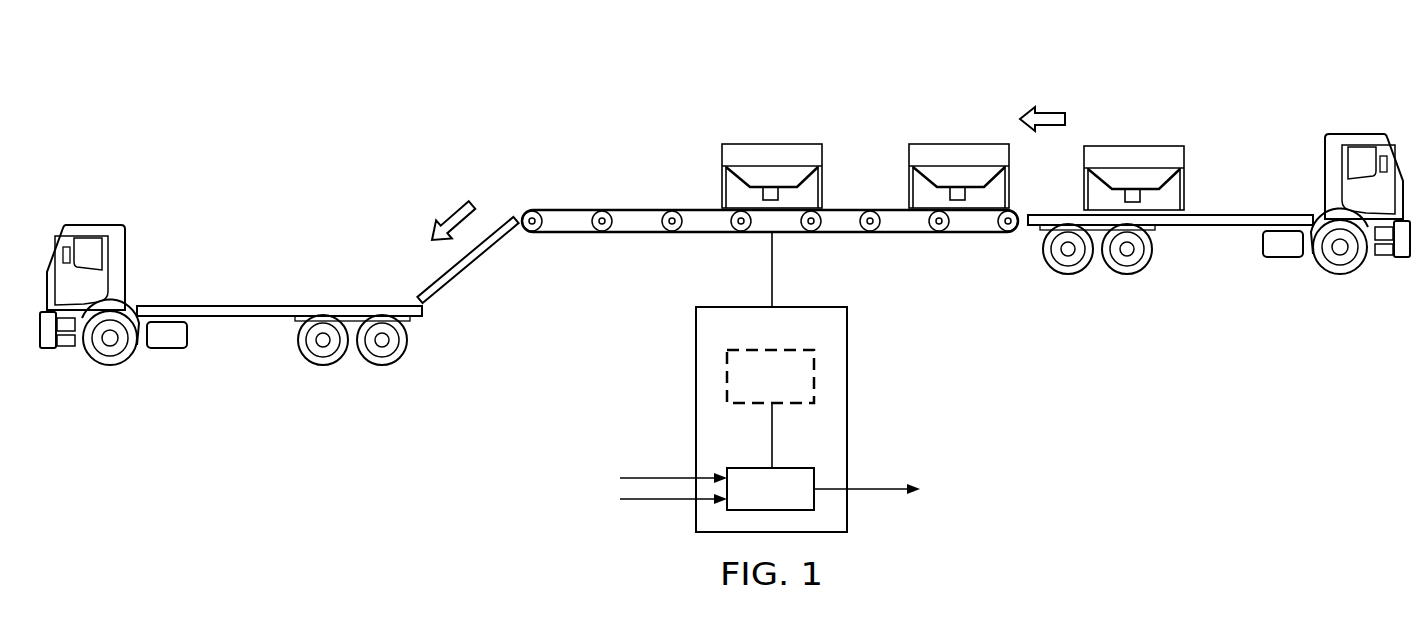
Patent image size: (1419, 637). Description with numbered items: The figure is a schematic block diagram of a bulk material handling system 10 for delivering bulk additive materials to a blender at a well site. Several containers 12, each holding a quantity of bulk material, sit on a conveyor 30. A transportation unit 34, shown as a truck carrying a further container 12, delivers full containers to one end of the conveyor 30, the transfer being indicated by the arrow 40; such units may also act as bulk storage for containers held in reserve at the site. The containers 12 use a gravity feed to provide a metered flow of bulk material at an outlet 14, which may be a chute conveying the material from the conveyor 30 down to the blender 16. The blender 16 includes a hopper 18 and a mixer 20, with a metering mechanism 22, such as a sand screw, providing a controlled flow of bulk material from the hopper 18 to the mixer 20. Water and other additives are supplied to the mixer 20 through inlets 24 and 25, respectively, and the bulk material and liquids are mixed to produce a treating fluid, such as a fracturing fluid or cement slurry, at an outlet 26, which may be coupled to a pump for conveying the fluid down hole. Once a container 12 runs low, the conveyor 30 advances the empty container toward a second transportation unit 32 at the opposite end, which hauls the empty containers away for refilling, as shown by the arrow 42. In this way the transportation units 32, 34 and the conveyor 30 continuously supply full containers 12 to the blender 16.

The bulk material handling system 10 is at (443, 72).
The container 12 is at (772, 144).
The outlet 14 is at (773, 265).
The blender 16 is at (853, 411).
The hopper 18 is at (787, 389).
The mixer 20 is at (750, 467).
The metering mechanism 22 is at (773, 437).
The inlet 24 is at (653, 476).
The inlet 25 is at (652, 501).
The outlet 26 is at (872, 491).
The conveyor 30 is at (634, 210).
The transportation unit 32 is at (90, 224).
The transportation unit 34 is at (1364, 132).
The arrow 40 is at (1051, 109).
The arrow 42 is at (458, 209).